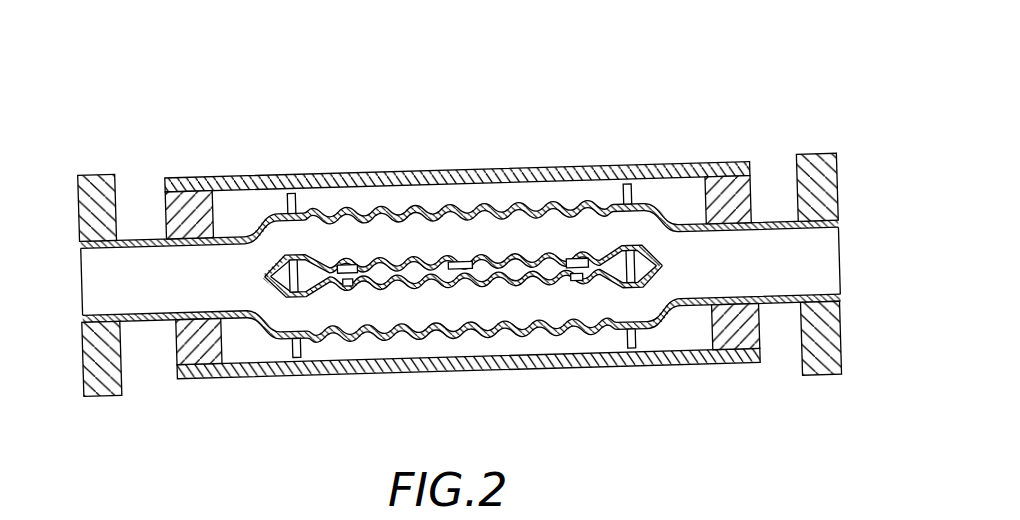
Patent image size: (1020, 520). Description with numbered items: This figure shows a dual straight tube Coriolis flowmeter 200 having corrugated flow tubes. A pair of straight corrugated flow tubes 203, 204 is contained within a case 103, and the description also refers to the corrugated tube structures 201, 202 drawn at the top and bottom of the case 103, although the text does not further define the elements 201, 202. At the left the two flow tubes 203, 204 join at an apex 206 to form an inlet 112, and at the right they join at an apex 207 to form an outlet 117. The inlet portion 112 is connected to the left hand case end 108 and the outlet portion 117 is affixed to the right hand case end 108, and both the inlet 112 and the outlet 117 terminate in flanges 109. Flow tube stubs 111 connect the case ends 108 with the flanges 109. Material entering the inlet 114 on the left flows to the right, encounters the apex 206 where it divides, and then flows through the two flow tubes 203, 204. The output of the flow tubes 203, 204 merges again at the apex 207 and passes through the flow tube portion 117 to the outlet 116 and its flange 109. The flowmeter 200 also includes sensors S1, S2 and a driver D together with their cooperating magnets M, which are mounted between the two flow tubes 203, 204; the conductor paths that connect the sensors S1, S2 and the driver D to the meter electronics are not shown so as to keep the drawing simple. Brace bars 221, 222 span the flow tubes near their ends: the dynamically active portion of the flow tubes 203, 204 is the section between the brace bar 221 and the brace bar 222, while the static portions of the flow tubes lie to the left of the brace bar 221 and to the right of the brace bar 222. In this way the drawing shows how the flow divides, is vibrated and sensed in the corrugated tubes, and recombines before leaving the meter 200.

The flowmeter 200 is at (301, 77).
The case 103 is at (476, 178).
The case end 108 is at (164, 220).
The flange 109 is at (98, 172).
The flow tube stub 111 is at (134, 324).
The inlet 112 is at (165, 288).
The inlet 114 is at (94, 293).
The outlet 116 is at (824, 296).
The outlet 117 is at (823, 280).
The upper corrugated tube wall 201 is at (267, 225).
The lower corrugated tube wall 202 is at (238, 342).
The flow tube 203 is at (403, 258).
The flow tube 204 is at (428, 331).
The apex 206 is at (261, 280).
The apex 207 is at (662, 280).
The brace bar 221 is at (298, 209).
The brace bar 222 is at (624, 206).
The sensor S1 is at (338, 271).
The sensor S2 is at (578, 270).
The driver D is at (471, 270).
The magnet M is at (340, 292).